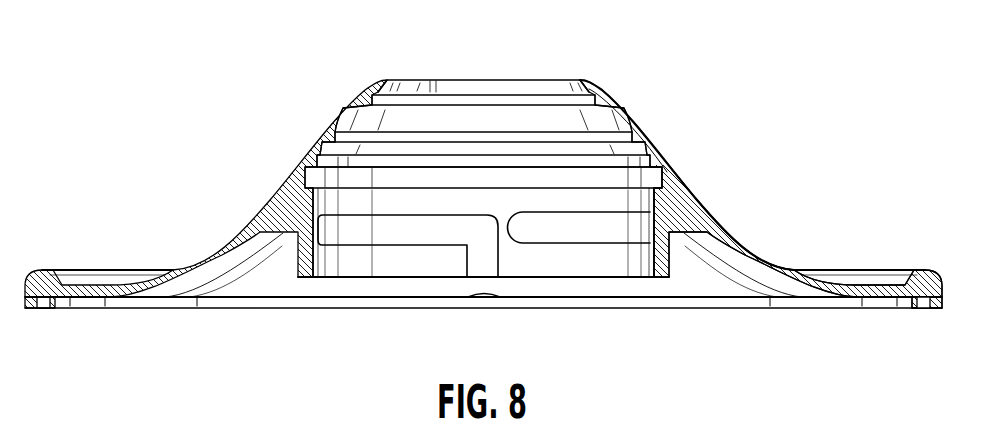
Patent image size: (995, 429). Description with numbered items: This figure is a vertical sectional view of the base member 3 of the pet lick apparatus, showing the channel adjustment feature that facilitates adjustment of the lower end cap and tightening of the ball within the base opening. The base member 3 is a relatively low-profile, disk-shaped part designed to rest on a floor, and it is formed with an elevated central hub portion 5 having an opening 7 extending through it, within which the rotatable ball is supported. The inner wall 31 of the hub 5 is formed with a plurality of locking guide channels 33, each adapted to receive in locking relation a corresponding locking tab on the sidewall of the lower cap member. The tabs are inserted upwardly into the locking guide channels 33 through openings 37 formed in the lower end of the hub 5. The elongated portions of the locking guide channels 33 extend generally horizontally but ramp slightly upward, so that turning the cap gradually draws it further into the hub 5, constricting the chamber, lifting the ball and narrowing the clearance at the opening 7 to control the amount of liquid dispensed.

The base member 3 is at (253, 183).
The central hub portion 5 is at (685, 185).
The opening 7 is at (542, 68).
The inner wall 31 is at (566, 262).
The locking guide channels 33 is at (395, 232).
The openings 37 is at (483, 280).